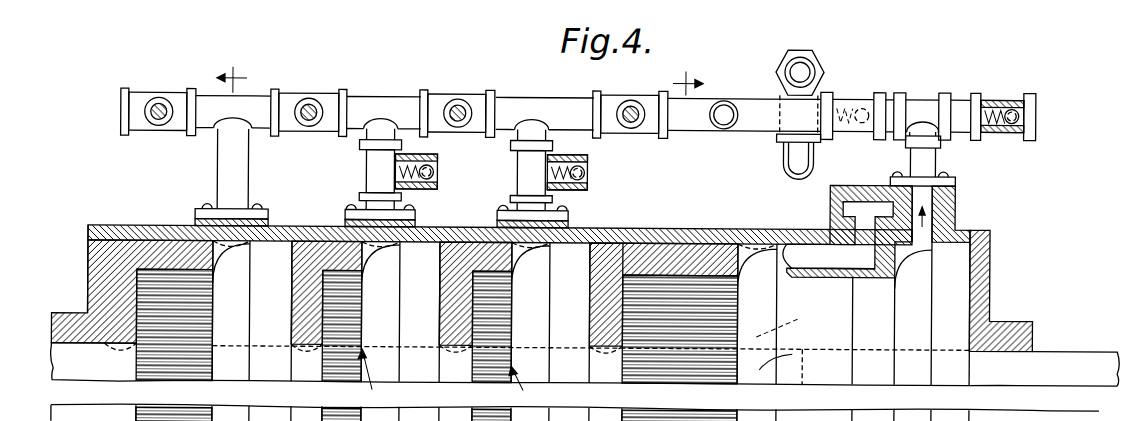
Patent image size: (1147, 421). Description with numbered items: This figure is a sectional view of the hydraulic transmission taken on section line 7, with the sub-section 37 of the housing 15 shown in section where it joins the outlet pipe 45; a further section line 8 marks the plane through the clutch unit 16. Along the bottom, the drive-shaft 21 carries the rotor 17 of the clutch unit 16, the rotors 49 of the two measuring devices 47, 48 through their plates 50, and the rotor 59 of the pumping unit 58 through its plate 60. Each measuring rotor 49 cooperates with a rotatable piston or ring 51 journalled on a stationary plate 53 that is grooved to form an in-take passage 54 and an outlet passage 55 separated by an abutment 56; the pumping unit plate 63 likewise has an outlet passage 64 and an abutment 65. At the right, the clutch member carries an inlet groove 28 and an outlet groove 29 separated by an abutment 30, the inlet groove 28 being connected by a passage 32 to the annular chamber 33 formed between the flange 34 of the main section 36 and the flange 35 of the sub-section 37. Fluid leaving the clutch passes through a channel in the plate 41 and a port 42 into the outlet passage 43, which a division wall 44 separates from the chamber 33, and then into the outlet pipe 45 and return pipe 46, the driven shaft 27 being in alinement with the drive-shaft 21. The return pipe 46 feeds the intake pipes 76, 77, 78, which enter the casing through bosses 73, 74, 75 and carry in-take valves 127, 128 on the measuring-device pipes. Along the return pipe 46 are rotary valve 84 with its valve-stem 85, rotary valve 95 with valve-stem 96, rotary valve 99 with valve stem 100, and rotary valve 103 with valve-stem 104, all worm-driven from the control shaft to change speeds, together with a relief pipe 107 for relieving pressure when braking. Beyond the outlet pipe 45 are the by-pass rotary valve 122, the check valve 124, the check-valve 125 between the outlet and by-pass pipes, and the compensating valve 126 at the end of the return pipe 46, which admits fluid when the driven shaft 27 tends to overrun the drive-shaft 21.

The section line of Figure 7 is at (232, 71).
The section line of Figure 8 is at (688, 75).
The housing 15 is at (620, 232).
The clutch unit 16 is at (701, 286).
The rotor 17 is at (690, 252).
The drive-shaft 21 is at (56, 361).
The driven shaft 27 is at (1084, 358).
The inlet groove 28 is at (789, 320).
The outlet groove 29 is at (786, 355).
The abutment 30 is at (760, 236).
The passage 32 is at (847, 258).
The annular chamber 33 is at (562, 411).
The flange 34 is at (832, 190).
The flange 35 is at (947, 204).
The main section 36 is at (660, 238).
The sub-section 37 is at (976, 241).
The plate 41 is at (958, 309).
The port 42 is at (987, 262).
The outlet passage 43 is at (932, 225).
The division wall 44 is at (921, 206).
The outlet pipe 45 is at (927, 165).
The return pipe 46 is at (532, 100).
The measuring device 47 is at (527, 387).
The measuring device 48 is at (375, 378).
The rotor 49 is at (338, 250).
The plate 50 is at (292, 300).
The rotatable piston or ring 51 is at (345, 324).
The stationary plate 53 is at (405, 333).
The in-take passage 54 is at (382, 286).
The outlet passage 55 is at (385, 371).
The abutment 56 is at (421, 224).
The pumping unit 58 is at (172, 250).
The rotor 59 is at (140, 240).
The plate 60 is at (108, 283).
The plate 63 is at (228, 307).
The outlet passage 64 is at (240, 375).
The abutment 65 is at (232, 262).
The boss 73 is at (267, 218).
The boss 74 is at (403, 194).
The boss 75 is at (554, 194).
The pipe 76 is at (246, 180).
The pipe 77 is at (372, 163).
The pipe 78 is at (520, 167).
The rotary valve 84 is at (146, 94).
The valve-stem 85 is at (158, 120).
The rotary valve 95 is at (297, 98).
The valve-stem 96 is at (303, 125).
The rotary valve 99 is at (453, 93).
The valve stem 100 is at (462, 110).
The rotary valve 103 is at (613, 98).
The valve-stem 104 is at (630, 124).
The relief pipe 107 is at (722, 126).
The rotary valve 122 is at (801, 58).
The check valve 124 is at (826, 94).
The check-valve 125 is at (869, 100).
The compensating valve 126 is at (995, 97).
The in-take valve 127 is at (421, 154).
The in-take valve 128 is at (551, 154).